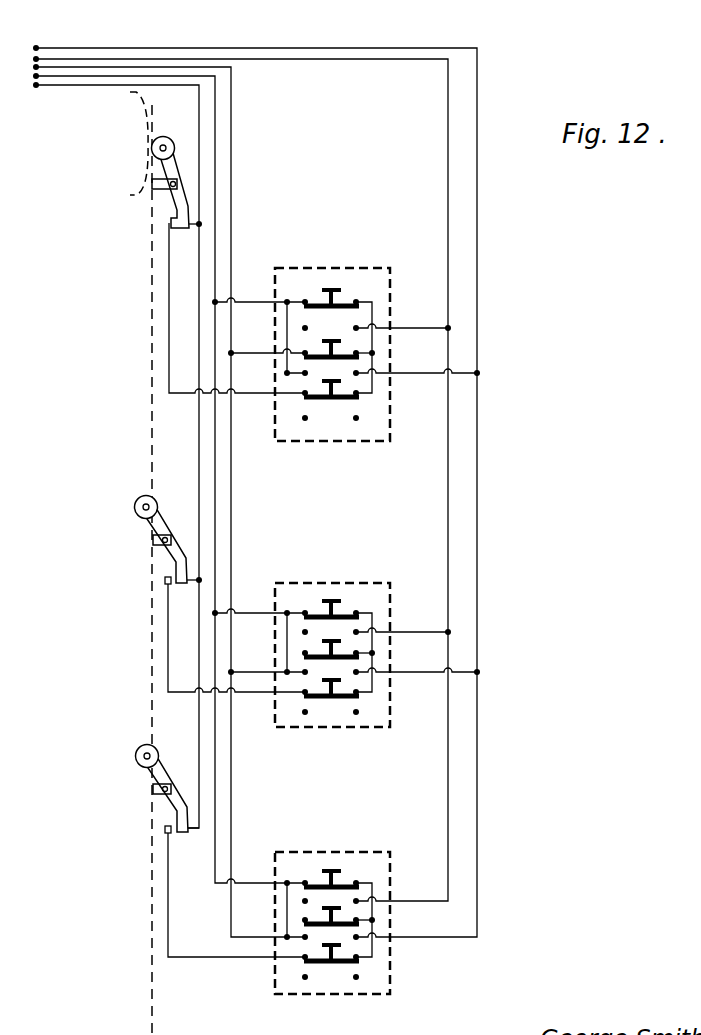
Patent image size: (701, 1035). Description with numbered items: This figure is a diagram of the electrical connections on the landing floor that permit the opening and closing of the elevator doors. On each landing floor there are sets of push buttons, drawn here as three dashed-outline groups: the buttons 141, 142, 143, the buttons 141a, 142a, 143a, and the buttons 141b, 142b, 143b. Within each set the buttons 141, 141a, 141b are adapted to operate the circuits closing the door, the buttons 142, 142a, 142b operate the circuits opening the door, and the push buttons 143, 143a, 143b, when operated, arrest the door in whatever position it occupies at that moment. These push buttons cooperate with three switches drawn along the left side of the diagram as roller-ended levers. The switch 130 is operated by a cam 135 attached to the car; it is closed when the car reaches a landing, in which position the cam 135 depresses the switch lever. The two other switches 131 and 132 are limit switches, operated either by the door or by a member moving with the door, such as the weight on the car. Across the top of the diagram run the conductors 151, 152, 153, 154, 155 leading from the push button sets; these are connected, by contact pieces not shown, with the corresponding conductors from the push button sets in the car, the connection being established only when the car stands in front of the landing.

The switch 130 is at (170, 200).
The limit switch 131 is at (173, 552).
The limit switch 132 is at (177, 800).
The cam 135 is at (130, 172).
The push button 141 is at (341, 882).
The push button 142 is at (342, 922).
The push button 143 is at (345, 962).
The push button 141a is at (343, 612).
The push button 142a is at (345, 655).
The push button 143a is at (345, 698).
The push button 141b is at (343, 298).
The push button 142b is at (346, 350).
The push button 143b is at (345, 403).
The conductor 151 is at (57, 86).
The conductor 152 is at (92, 77).
The conductor 153 is at (118, 66).
The conductor 154 is at (175, 58).
The conductor 155 is at (260, 49).